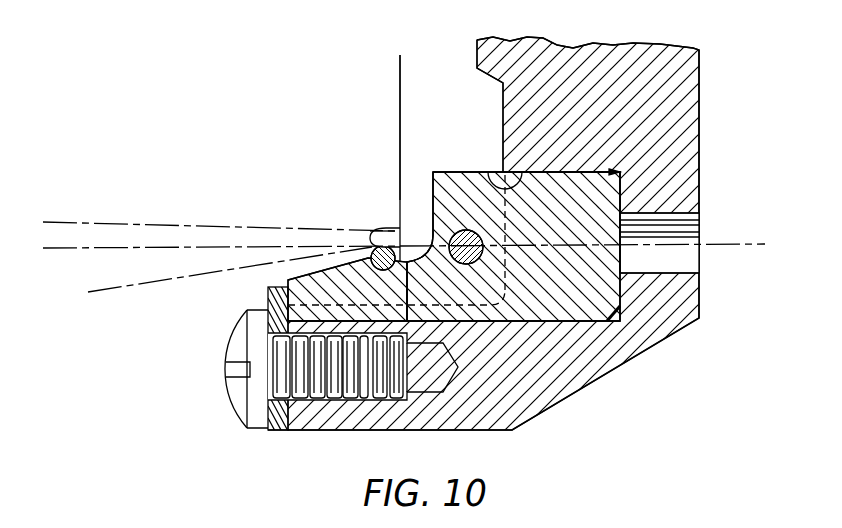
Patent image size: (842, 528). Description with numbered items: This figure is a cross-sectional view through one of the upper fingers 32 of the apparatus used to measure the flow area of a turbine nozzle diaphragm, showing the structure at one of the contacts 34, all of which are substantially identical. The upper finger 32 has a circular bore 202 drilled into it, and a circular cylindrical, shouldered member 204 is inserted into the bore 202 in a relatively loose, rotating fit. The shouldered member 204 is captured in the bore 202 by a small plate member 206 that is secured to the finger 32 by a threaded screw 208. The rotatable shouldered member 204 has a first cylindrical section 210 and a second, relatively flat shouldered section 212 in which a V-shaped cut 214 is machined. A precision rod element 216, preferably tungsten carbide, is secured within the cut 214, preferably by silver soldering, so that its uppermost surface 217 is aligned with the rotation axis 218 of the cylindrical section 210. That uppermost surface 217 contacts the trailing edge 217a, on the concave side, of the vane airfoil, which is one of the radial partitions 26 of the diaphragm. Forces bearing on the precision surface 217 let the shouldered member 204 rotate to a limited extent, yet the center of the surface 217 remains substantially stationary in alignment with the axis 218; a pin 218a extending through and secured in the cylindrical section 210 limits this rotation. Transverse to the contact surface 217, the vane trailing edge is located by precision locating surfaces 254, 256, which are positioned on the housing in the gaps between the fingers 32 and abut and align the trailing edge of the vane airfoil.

The radial partitions 26 is at (178, 222).
The upper finger 32 is at (688, 82).
The contact 34 is at (363, 232).
The circular bore 202 is at (489, 173).
The shouldered member 204 is at (468, 171).
The plate member 206 is at (268, 290).
The threaded screw 208 is at (240, 400).
The first cylindrical section 210 is at (571, 230).
The second shouldered section 212 is at (372, 284).
The V-shaped cut 214 is at (453, 258).
The precision rod element 216 is at (368, 238).
The uppermost surface 217 is at (376, 222).
The trailing edge 217a is at (397, 226).
The rotation axis 218 is at (744, 244).
The pin 218a is at (432, 208).
The precision locating surface 254 is at (398, 67).
The precision locating surface 256 is at (398, 67).